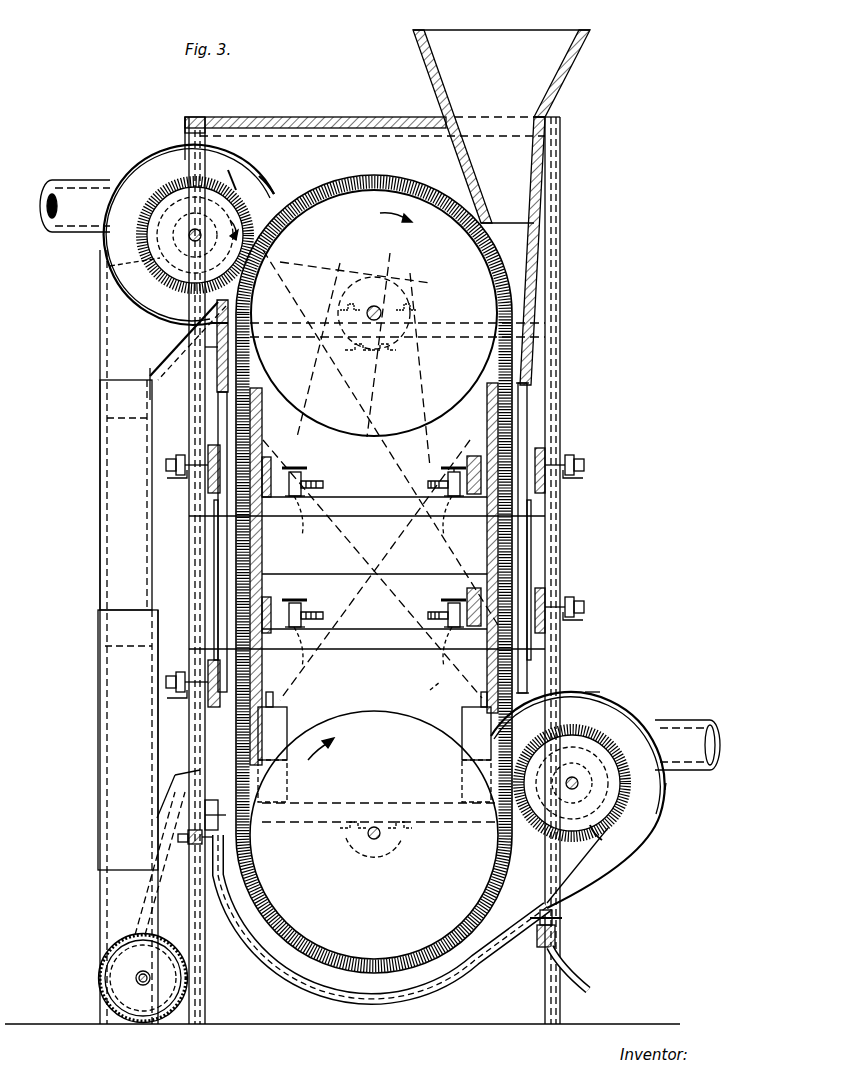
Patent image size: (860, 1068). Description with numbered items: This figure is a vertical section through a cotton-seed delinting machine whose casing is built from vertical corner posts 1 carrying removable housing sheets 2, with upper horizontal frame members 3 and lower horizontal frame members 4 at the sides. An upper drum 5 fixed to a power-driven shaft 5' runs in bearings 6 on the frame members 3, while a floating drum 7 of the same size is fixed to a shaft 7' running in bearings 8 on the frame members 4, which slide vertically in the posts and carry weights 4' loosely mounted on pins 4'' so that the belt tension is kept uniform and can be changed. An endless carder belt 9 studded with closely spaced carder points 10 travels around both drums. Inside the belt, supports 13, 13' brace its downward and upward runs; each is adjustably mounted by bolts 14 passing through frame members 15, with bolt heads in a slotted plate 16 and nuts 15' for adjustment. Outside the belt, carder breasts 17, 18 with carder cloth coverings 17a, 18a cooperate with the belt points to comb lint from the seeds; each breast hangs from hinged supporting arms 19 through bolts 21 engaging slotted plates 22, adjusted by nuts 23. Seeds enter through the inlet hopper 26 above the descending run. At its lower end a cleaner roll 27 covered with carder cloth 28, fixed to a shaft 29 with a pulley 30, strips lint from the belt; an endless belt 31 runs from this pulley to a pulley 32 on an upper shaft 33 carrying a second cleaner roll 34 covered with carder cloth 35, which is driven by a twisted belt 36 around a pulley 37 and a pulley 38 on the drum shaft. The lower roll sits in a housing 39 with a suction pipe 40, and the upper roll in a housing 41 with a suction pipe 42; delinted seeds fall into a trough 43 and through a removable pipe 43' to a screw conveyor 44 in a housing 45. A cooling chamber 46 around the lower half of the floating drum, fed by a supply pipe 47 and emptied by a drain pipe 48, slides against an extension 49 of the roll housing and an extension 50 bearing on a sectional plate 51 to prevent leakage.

The corner posts 1 is at (561, 155).
The housing sheets 2 is at (380, 140).
The upper horizontal frame members 3 is at (448, 348).
The lower horizontal frame members 4 is at (374, 808).
The weights 4' is at (374, 724).
The pins 4'' is at (376, 689).
The drum 5 is at (374, 304).
The shaft 5' is at (409, 299).
The bearings 6 is at (396, 296).
The floating drum 7 is at (374, 819).
The shaft 7' is at (397, 847).
The bearings 8 is at (370, 840).
The endless carder belt 9 is at (395, 180).
The carder points 10 is at (370, 182).
The support 13 is at (480, 548).
The support 13' is at (289, 576).
The bolts 14 is at (324, 482).
The frame members 15 is at (377, 526).
The nuts 15' is at (380, 582).
The slotted plate 16 is at (467, 460).
The carder breast 17 is at (528, 415).
The carder cloth covering 17a is at (530, 540).
The carder breast 18 is at (218, 582).
The carder cloth covering 18a is at (222, 614).
The supporting arms 19 is at (583, 478).
The bolts 21 is at (585, 462).
The slotted plates 22 is at (540, 452).
The nuts 23 is at (570, 455).
The inlet hopper 26 is at (552, 70).
The cleaner roll 27 is at (628, 808).
The carder cloth 28 is at (630, 812).
The shaft 29 is at (580, 775).
The pulley 30 is at (604, 690).
The endless belt 31 is at (427, 689).
The pulley 32 is at (278, 193).
The shaft 33 is at (190, 228).
The cleaner roll 34 is at (225, 185).
The carder cloth 35 is at (242, 196).
The twisted belt 36 is at (320, 262).
The pulley 37 is at (114, 267).
The pulley 38 is at (375, 282).
The housing 39 is at (668, 800).
The suction pipe 40 is at (703, 720).
The housing 41 is at (130, 161).
The suction pipe 42 is at (55, 180).
The trough 43 is at (85, 637).
The pipe 43' is at (97, 702).
The screw conveyor 44 is at (110, 978).
The housing 45 is at (108, 958).
The cooling chamber 46 is at (330, 980).
The supply pipe 47 is at (190, 842).
The drain pipe 48 is at (540, 950).
The extension 49 is at (556, 918).
The extension 50 is at (178, 838).
The sectional plate 51 is at (205, 792).